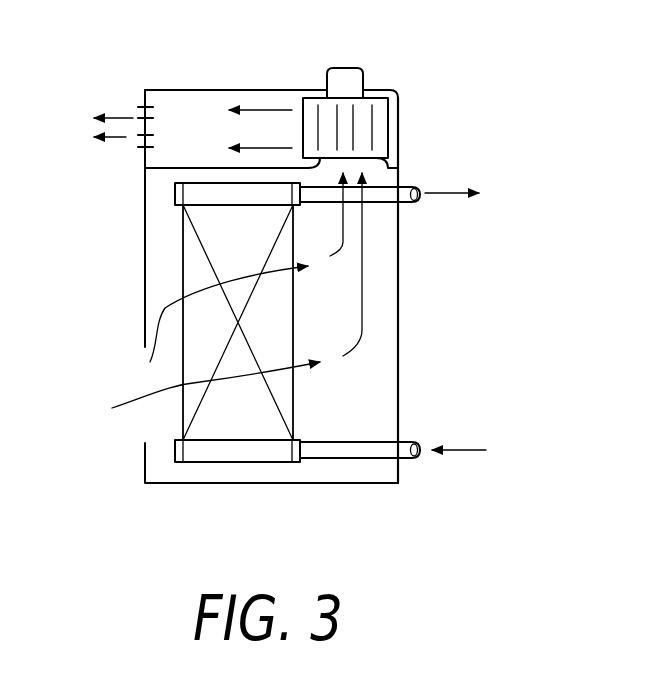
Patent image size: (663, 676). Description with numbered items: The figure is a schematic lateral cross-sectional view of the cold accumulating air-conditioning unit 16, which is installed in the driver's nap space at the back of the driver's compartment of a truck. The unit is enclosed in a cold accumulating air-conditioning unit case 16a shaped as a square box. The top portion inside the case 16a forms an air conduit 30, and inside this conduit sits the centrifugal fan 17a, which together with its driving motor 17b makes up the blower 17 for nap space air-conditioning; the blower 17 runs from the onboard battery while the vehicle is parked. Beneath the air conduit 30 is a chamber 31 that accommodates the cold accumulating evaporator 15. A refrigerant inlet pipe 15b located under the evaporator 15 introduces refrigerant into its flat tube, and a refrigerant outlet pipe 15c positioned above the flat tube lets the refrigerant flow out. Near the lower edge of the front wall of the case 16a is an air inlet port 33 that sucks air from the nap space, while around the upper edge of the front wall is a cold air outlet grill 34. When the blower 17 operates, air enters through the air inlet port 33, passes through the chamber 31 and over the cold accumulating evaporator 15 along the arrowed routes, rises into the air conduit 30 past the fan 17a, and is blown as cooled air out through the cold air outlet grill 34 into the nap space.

The cold accumulating evaporator 15 is at (233, 435).
The refrigerant inlet pipe 15b is at (406, 440).
The refrigerant outlet pipe 15c is at (414, 186).
The cold accumulating air-conditioning unit 16 is at (339, 285).
The cold accumulating air-conditioning unit case 16a is at (398, 312).
The blower 17 is at (385, 79).
The centrifugal fan 17a is at (384, 104).
The driving motor 17b is at (362, 68).
The air conduit 30 is at (220, 90).
The chamber 31 is at (312, 232).
The air inlet port 33 is at (150, 425).
The cold air outlet grill 34 is at (152, 110).